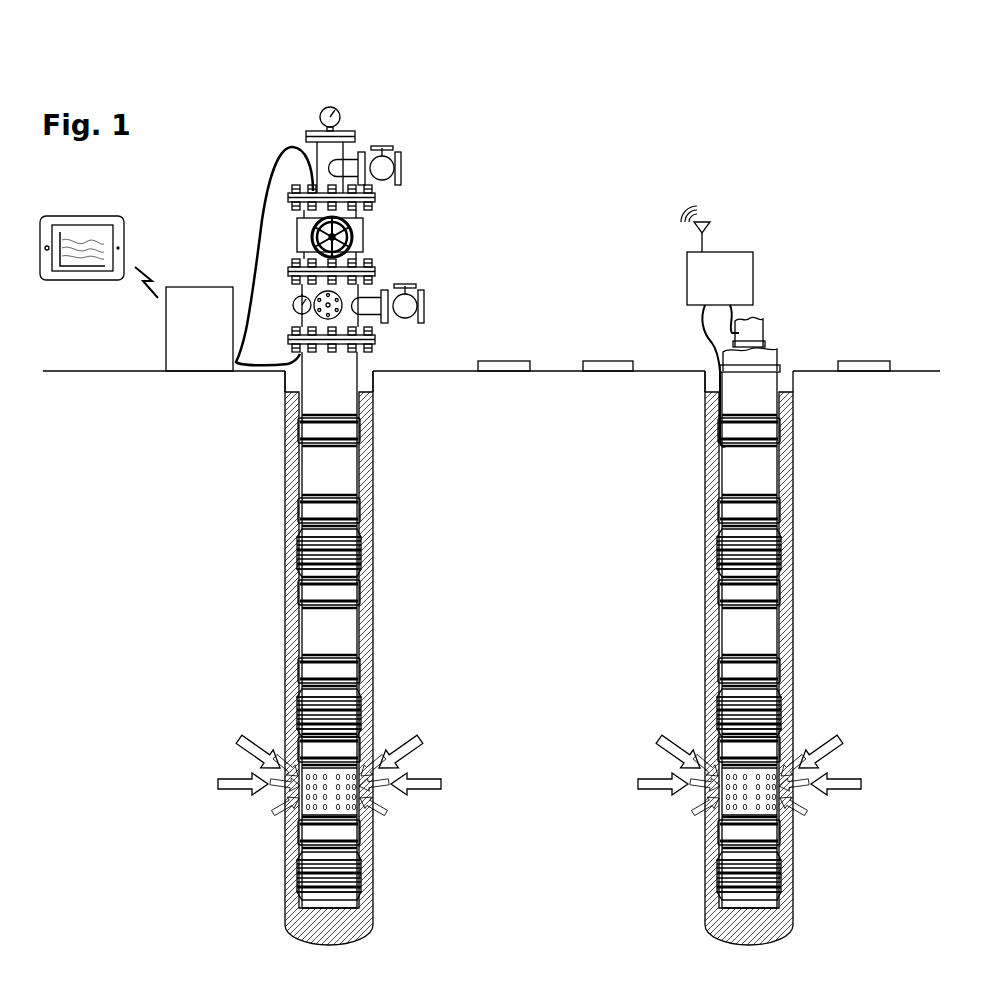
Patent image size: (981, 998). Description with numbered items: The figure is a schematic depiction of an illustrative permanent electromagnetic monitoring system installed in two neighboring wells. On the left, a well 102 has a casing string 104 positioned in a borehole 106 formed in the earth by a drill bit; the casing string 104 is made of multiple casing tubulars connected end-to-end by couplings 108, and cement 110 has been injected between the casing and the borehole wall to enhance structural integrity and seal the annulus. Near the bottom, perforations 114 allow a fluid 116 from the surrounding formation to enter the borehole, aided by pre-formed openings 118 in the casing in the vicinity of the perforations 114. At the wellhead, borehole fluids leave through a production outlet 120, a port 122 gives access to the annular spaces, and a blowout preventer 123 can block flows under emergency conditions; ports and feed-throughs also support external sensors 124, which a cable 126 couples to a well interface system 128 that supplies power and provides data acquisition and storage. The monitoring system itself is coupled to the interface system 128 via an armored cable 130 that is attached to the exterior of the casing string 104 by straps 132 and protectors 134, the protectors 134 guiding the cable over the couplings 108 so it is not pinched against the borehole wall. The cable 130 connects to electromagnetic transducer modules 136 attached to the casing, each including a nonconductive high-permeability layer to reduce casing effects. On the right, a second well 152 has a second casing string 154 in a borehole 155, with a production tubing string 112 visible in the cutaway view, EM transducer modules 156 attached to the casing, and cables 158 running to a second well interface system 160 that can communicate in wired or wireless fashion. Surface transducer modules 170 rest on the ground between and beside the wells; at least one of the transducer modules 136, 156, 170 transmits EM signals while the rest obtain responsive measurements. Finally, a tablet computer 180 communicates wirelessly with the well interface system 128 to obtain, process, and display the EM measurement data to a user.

The well 102 is at (402, 86).
The casing string 104 is at (358, 399).
The borehole 106 is at (285, 374).
The couplings 108 is at (356, 512).
The cement 110 is at (294, 472).
The production tubing string 112 is at (763, 328).
The perforations 114 is at (368, 795).
The fluid 116 is at (341, 774).
The pre-formed openings 118 is at (358, 813).
The production outlet 120 is at (392, 152).
The port 122 is at (401, 290).
The blowout preventer 123 is at (366, 246).
The external sensors 124 is at (319, 113).
The cable 126 is at (269, 178).
The well interface system 128 is at (166, 336).
The armored cable 130 is at (296, 358).
The straps 132 is at (373, 372).
The protectors 134 is at (297, 433).
The electromagnetic transducer modules 136 is at (299, 695).
The second well 152 is at (777, 188).
The second casing string 154 is at (779, 399).
The borehole 155 is at (705, 374).
The EM transducer modules 156 is at (719, 695).
The cables 158 is at (716, 334).
The second well interface system 160 is at (696, 307).
The surface transducer modules 170 is at (590, 361).
The tablet computer 180 is at (75, 281).